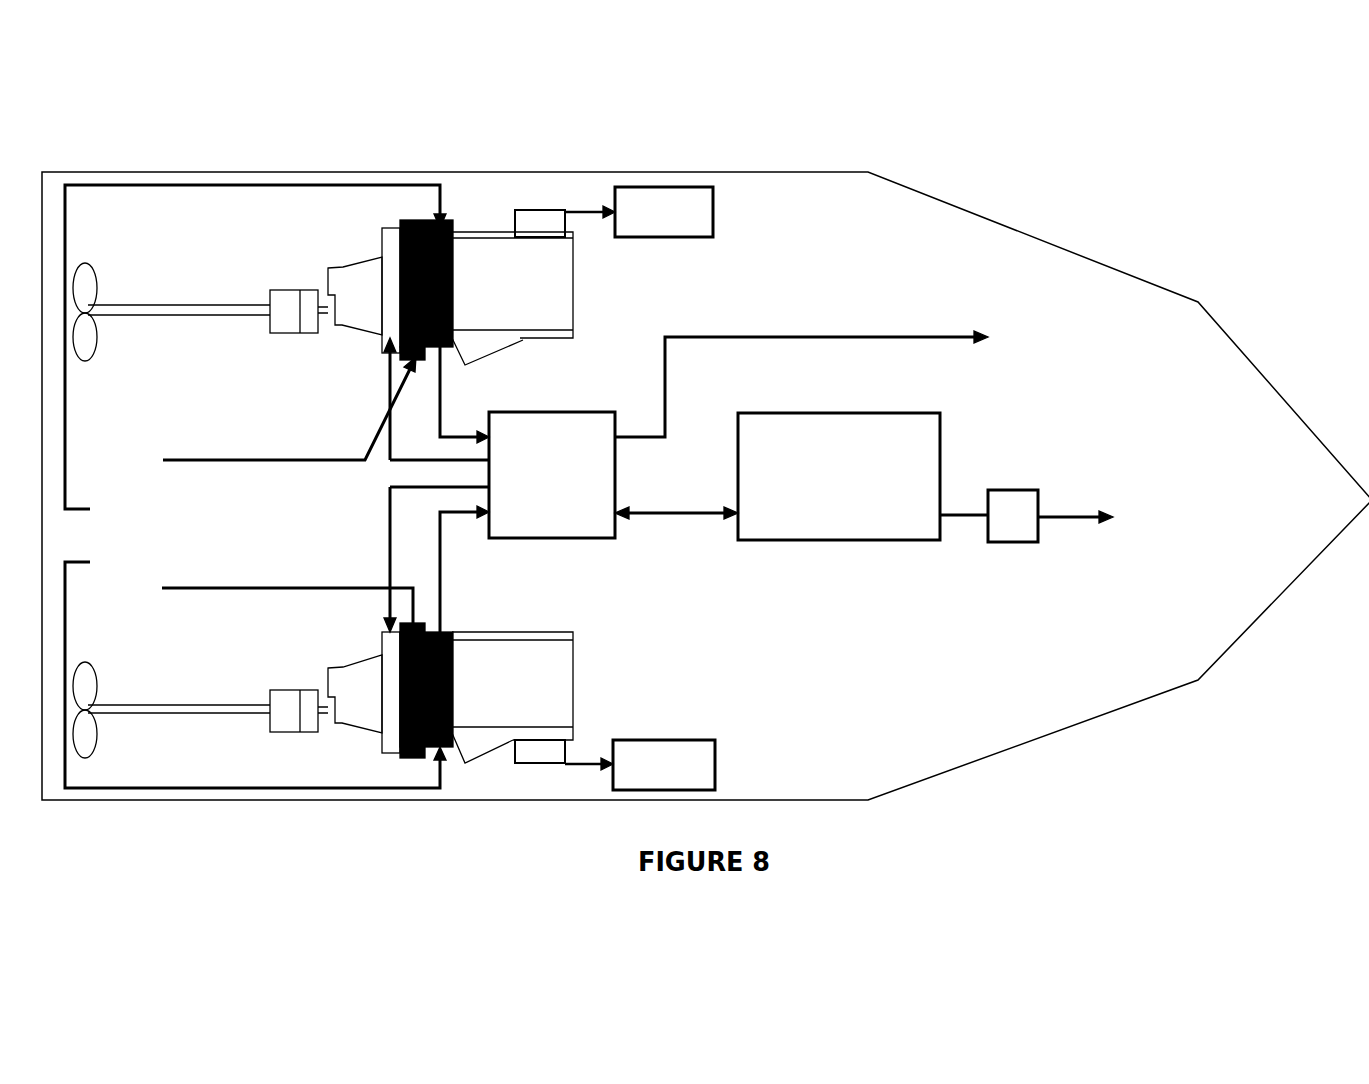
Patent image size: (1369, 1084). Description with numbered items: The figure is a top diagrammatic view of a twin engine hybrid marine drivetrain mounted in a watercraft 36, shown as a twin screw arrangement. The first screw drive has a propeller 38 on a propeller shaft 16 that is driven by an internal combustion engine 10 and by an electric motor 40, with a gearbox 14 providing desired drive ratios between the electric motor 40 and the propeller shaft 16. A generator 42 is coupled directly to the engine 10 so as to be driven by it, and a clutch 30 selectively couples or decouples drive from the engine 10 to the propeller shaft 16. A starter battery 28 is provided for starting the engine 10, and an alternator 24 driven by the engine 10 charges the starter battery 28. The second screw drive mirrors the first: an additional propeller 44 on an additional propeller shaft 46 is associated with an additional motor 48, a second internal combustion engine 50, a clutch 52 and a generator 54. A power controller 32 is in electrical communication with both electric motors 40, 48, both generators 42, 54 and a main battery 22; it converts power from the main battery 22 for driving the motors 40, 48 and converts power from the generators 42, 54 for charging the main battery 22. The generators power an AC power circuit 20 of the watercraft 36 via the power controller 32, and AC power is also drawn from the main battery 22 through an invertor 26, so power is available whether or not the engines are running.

The internal combustion engine 10 is at (537, 288).
The gearbox 14 is at (338, 351).
The propeller shaft 16 is at (207, 305).
The AC power circuit 20 is at (818, 337).
The main battery 22 is at (922, 487).
The alternator 24 is at (527, 210).
The invertor 26 is at (1017, 530).
The starter battery 28 is at (677, 188).
The clutch 30 is at (294, 341).
The power controller 32 is at (540, 437).
The watercraft 36 is at (1058, 730).
The propeller 38 is at (83, 267).
The electric motor 40 is at (385, 322).
The generator 42 is at (255, 349).
The additional propeller 44 is at (83, 662).
The additional propeller shaft 46 is at (192, 710).
The additional motor 48 is at (380, 650).
The internal combustion engine 50 is at (555, 668).
The clutch 52 is at (294, 667).
The generator 54 is at (255, 670).